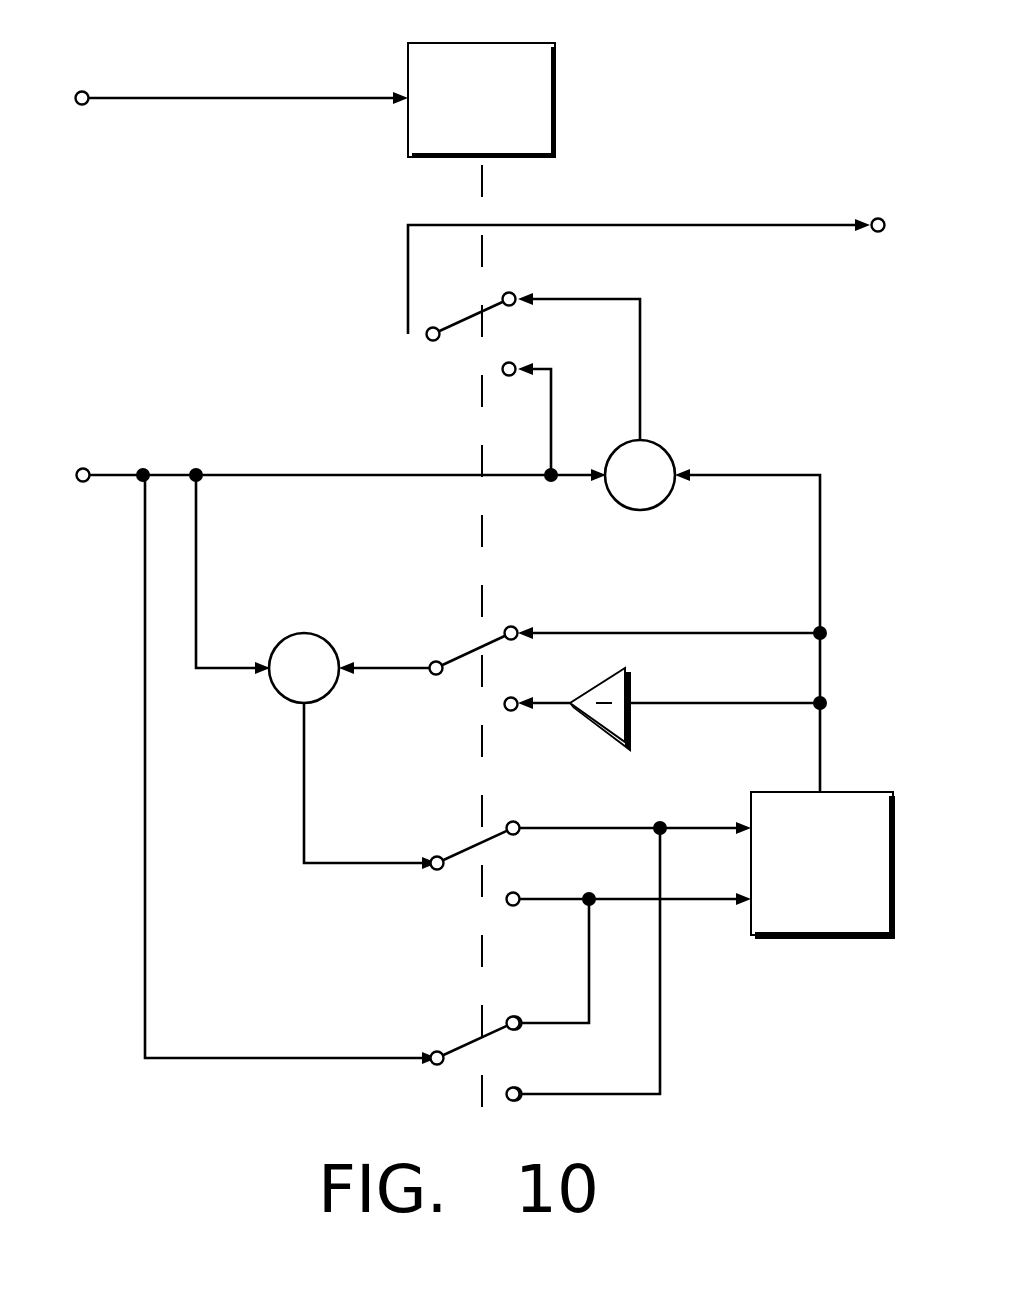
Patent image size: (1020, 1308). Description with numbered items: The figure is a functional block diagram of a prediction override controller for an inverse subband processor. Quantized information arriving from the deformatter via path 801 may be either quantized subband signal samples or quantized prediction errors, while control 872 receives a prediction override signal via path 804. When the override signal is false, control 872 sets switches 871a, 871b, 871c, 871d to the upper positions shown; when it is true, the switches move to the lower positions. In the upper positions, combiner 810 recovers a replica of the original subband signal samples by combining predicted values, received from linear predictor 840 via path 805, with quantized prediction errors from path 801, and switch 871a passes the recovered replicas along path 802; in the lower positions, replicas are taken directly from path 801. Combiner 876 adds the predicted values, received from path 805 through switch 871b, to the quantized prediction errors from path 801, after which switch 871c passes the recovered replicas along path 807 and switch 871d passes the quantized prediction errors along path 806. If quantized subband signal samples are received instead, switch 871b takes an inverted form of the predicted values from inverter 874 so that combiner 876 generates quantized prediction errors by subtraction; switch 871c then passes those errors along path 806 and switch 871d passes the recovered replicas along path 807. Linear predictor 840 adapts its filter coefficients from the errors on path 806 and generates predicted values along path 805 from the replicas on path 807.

The path 804 is at (240, 95).
The control 872 is at (500, 42).
The path 802 is at (683, 224).
The switch 871a is at (432, 344).
The path 801 is at (260, 470).
The path 805 is at (760, 473).
The combiner 810 is at (640, 512).
The combiner 876 is at (305, 632).
The switch 871b is at (436, 660).
The inverter 874 is at (585, 720).
The linear predictor 840 is at (790, 788).
The path 807 is at (538, 825).
The path 806 is at (538, 896).
The switch 871c is at (437, 855).
The switch 871d is at (437, 1050).